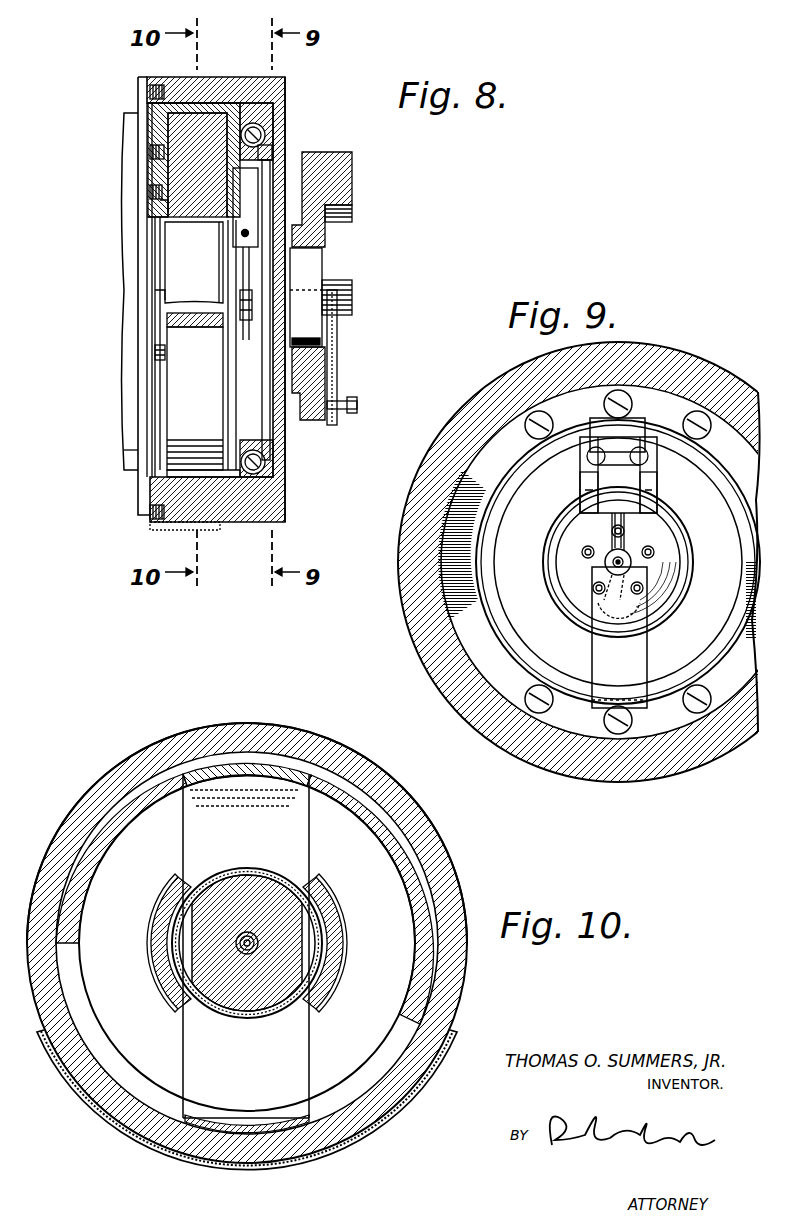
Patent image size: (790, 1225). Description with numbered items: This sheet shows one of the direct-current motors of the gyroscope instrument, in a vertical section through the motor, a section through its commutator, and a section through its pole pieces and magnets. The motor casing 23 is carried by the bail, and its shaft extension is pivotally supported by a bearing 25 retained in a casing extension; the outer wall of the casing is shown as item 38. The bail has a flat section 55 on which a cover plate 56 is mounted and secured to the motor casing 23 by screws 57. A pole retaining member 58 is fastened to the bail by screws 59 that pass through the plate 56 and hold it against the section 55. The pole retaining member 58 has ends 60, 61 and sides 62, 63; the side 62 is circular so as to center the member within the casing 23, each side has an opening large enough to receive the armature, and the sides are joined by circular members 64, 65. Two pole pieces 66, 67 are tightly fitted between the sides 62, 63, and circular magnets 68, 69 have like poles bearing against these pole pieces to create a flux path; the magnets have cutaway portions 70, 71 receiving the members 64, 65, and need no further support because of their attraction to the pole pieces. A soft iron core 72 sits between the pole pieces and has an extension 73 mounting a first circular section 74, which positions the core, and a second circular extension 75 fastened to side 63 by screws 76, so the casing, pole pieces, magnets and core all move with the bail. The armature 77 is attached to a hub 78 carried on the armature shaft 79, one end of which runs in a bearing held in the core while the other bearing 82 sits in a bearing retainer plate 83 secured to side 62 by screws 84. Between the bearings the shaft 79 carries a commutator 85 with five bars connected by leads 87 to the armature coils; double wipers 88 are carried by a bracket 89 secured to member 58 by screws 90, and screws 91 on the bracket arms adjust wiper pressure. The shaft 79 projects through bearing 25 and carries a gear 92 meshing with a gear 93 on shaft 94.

In FIG. 8, the motor casing 23 is at (258, 77).
In FIG. 9, the motor casing 23 is at (712, 372).
In FIG. 10, the motor casing 23 is at (330, 742).
In FIG. 8, the bearing 25 is at (310, 265).
In FIG. 8, the housing wall 38 is at (297, 107).
In FIG. 9, the housing wall 38 is at (398, 616).
In FIG. 10, the housing wall 38 is at (152, 745).
In FIG. 8, the flat section 55 is at (138, 138).
In FIG. 8, the cover plate 56 is at (175, 181).
In FIG. 8, the screws 57 is at (157, 87).
In FIG. 8, the pole retaining member 58 is at (198, 100).
In FIG. 9, the pole retaining member 58 is at (490, 432).
In FIG. 10, the pole retaining member 58 is at (290, 745).
In FIG. 8, the screws 59 is at (150, 152).
In FIG. 8, the end 60 is at (180, 106).
In FIG. 10, the end 60 is at (243, 770).
In FIG. 8, the end 61 is at (225, 496).
In FIG. 10, the end 61 is at (258, 1130).
In FIG. 8, the side 62 is at (268, 152).
In FIG. 9, the side 62 is at (492, 452).
In FIG. 10, the side 62 is at (415, 872).
In FIG. 8, the side 63 is at (160, 217).
In FIG. 10, the circular member 64 is at (160, 957).
In FIG. 8, the circular member 65 is at (162, 312).
In FIG. 10, the circular member 65 is at (336, 930).
In FIG. 8, the pole piece 66 is at (152, 192).
In FIG. 10, the pole piece 66 is at (207, 772).
In FIG. 10, the pole piece 67 is at (212, 1112).
In FIG. 10, the circular magnet 68 is at (110, 843).
In FIG. 8, the circular magnet 69 is at (175, 375).
In FIG. 10, the circular magnet 69 is at (372, 830).
In FIG. 10, the cutaway portion 70 is at (153, 945).
In FIG. 10, the cutaway portion 71 is at (335, 912).
In FIG. 10, the soft iron core 72 is at (240, 882).
In FIG. 8, the extension 73 is at (160, 296).
In FIG. 8, the first circular section 74 is at (158, 262).
In FIG. 8, the second circular extension 75 is at (150, 240).
In FIG. 8, the screws 76 is at (165, 206).
In FIG. 8, the armature 77 is at (200, 322).
In FIG. 9, the armature 77 is at (682, 552).
In FIG. 10, the armature 77 is at (265, 872).
In FIG. 8, the hub 78 is at (228, 272).
In FIG. 9, the hub 78 is at (648, 540).
In FIG. 8, the armature shaft 79 is at (288, 304).
In FIG. 9, the armature shaft 79 is at (612, 562).
In FIG. 9, the bearing 82 is at (616, 604).
In FIG. 8, the bearing retainer plate 83 is at (270, 176).
In FIG. 9, the bearing retainer plate 83 is at (636, 656).
In FIG. 8, the screws 84 is at (262, 135).
In FIG. 9, the screws 84 is at (705, 436).
In FIG. 8, the commutator 85 is at (248, 320).
In FIG. 9, the commutator 85 is at (632, 570).
In FIG. 9, the leads 87 is at (582, 553).
In FIG. 8, the double wipers 88 is at (240, 252).
In FIG. 9, the double wipers 88 is at (610, 532).
In FIG. 8, the bracket 89 is at (250, 192).
In FIG. 9, the bracket 89 is at (652, 470).
In FIG. 9, the screws 90 is at (592, 466).
In FIG. 8, the screws 91 is at (249, 233).
In FIG. 9, the screws 91 is at (598, 496).
In FIG. 8, the gear 92 is at (352, 298).
In FIG. 8, the gear 93 is at (337, 352).
In FIG. 8, the shaft 94 is at (357, 404).